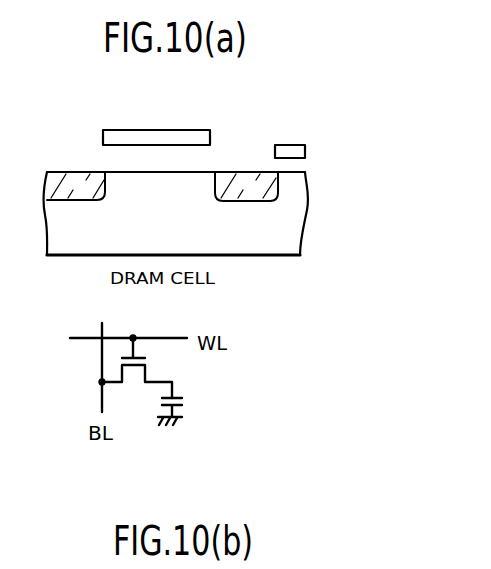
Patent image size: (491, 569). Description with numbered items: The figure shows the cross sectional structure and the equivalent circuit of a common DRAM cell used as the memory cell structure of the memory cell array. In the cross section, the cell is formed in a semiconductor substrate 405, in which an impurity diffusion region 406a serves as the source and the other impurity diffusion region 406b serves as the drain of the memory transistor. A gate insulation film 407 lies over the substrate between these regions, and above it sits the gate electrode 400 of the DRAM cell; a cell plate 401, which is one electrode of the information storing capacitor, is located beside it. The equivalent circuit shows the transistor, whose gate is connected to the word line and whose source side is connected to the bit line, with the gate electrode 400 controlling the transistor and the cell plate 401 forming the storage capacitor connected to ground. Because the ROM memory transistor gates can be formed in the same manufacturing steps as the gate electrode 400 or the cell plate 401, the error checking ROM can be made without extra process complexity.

In FIG. 10A, the gate electrode 400 is at (157, 130).
In FIG. 10B, the gate electrode 400 is at (148, 353).
In FIG. 10A, the cell plate 401 is at (283, 145).
In FIG. 10B, the cell plate 401 is at (182, 407).
In FIG. 10A, the semiconductor substrate 405 is at (279, 244).
In FIG. 10A, the impurity diffusion region 406a is at (90, 200).
In FIG. 10A, the impurity diffusion region 406b is at (270, 203).
In FIG. 10A, the gate insulation film 407 is at (122, 167).